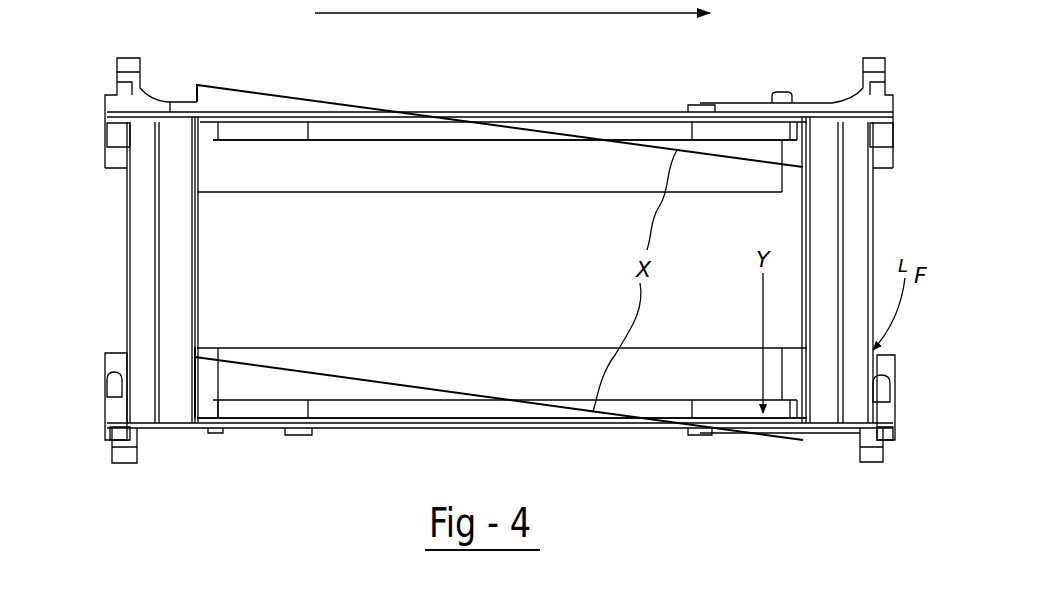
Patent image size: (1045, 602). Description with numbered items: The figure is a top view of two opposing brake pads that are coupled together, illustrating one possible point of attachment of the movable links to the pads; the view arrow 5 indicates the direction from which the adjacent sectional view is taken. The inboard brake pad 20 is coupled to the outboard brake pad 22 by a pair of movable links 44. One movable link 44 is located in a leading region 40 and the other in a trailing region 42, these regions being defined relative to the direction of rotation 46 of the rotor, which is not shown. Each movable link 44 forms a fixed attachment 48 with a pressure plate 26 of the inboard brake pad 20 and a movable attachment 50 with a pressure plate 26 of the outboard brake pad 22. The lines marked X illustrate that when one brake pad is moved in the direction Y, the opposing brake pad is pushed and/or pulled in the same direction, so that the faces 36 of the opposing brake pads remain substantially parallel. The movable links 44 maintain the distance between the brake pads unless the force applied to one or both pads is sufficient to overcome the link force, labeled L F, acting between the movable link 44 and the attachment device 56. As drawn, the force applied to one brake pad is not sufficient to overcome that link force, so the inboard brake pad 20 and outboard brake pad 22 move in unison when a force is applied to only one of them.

The section view direction arrow (FIG. 5) 5 is at (110, 258).
The inboard brake pad 20 is at (547, 110).
The outboard brake pad 22 is at (352, 410).
The pressure plate 26 is at (588, 128).
The faces 36 is at (383, 190).
The leading region 40 is at (310, 457).
The trailing region 42 is at (885, 457).
The movable link 44 is at (138, 210).
The direction of rotation 46 is at (377, 13).
The fixed attachment 48 is at (182, 62).
The movable attachment 50 is at (115, 340).
The attachment device 56 is at (147, 398).